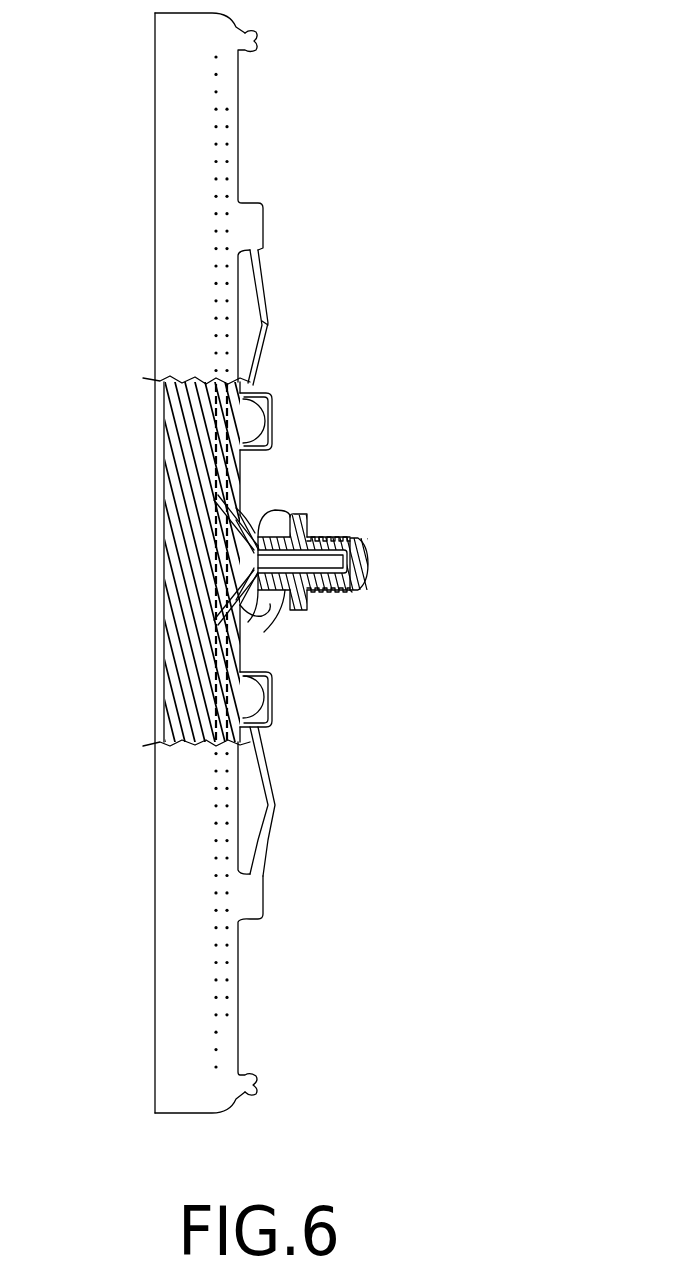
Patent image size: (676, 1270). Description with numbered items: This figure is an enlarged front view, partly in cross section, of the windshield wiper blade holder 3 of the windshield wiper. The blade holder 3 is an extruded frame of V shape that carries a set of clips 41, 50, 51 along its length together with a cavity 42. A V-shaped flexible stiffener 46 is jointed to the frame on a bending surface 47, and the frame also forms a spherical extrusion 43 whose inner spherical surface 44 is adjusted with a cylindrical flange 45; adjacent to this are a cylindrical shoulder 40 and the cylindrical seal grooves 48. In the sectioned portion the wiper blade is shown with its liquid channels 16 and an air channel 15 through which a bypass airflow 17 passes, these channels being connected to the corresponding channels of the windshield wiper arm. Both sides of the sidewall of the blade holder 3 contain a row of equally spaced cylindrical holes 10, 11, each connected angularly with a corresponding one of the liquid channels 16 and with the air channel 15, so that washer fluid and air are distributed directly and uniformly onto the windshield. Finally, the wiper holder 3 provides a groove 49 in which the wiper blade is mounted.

The windshield wiper blade holder 3 is at (238, 138).
The cylindrical holes 10 is at (227, 963).
The cylindrical holes 11 is at (217, 1032).
The air channel 15 is at (352, 590).
The liquid channels 16 is at (335, 592).
The bypass airflow 17 is at (278, 615).
The cylindrical shoulder 40 is at (315, 592).
The clip 41 is at (258, 387).
The cavity 42 is at (253, 422).
The spherical extrusion 43 is at (268, 500).
The inner spherical surface 44 is at (262, 515).
The cylindrical flange 45 is at (300, 515).
The V shape flexible stiffener 46 is at (263, 280).
The bending surface 47 is at (272, 322).
The cylindrical seal grooves 48 is at (355, 537).
The groove 49 is at (163, 517).
The clip 50 is at (263, 897).
The clip 51 is at (253, 1078).